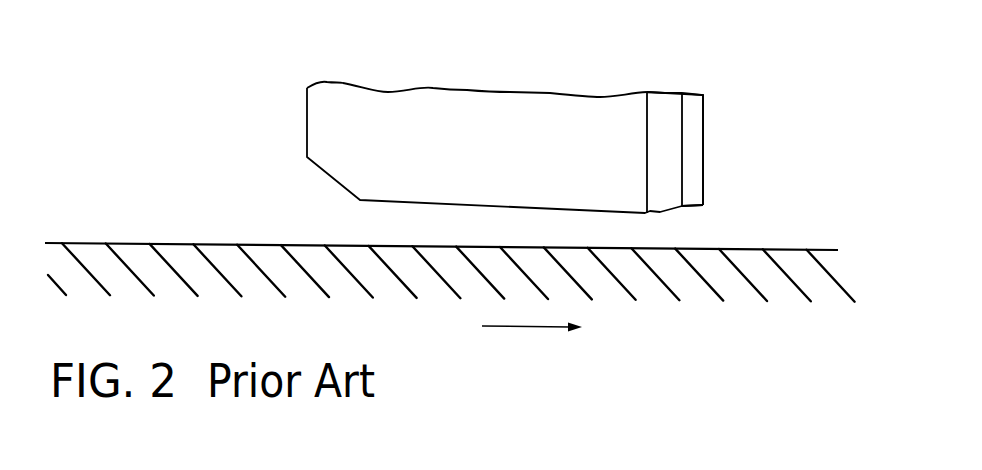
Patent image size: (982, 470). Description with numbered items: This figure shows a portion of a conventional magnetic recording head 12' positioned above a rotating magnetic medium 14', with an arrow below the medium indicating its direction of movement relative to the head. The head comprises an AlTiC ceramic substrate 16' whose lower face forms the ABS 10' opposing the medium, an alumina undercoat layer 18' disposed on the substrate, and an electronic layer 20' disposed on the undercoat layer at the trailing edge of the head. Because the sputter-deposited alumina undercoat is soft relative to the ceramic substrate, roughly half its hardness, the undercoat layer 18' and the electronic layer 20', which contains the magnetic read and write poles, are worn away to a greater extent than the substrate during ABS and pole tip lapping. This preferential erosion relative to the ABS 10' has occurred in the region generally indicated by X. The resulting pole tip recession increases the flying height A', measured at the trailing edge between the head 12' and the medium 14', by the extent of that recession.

The ABS 10' is at (542, 133).
The magnetic recording head 12' is at (721, 116).
The rotating magnetic medium 14' is at (450, 242).
The ceramic substrate 16' is at (477, 69).
The alumina undercoat layer 18' is at (639, 120).
The electronic layer 20' is at (740, 149).
The region of preferential erosion X is at (712, 226).
The flying height A' is at (666, 228).